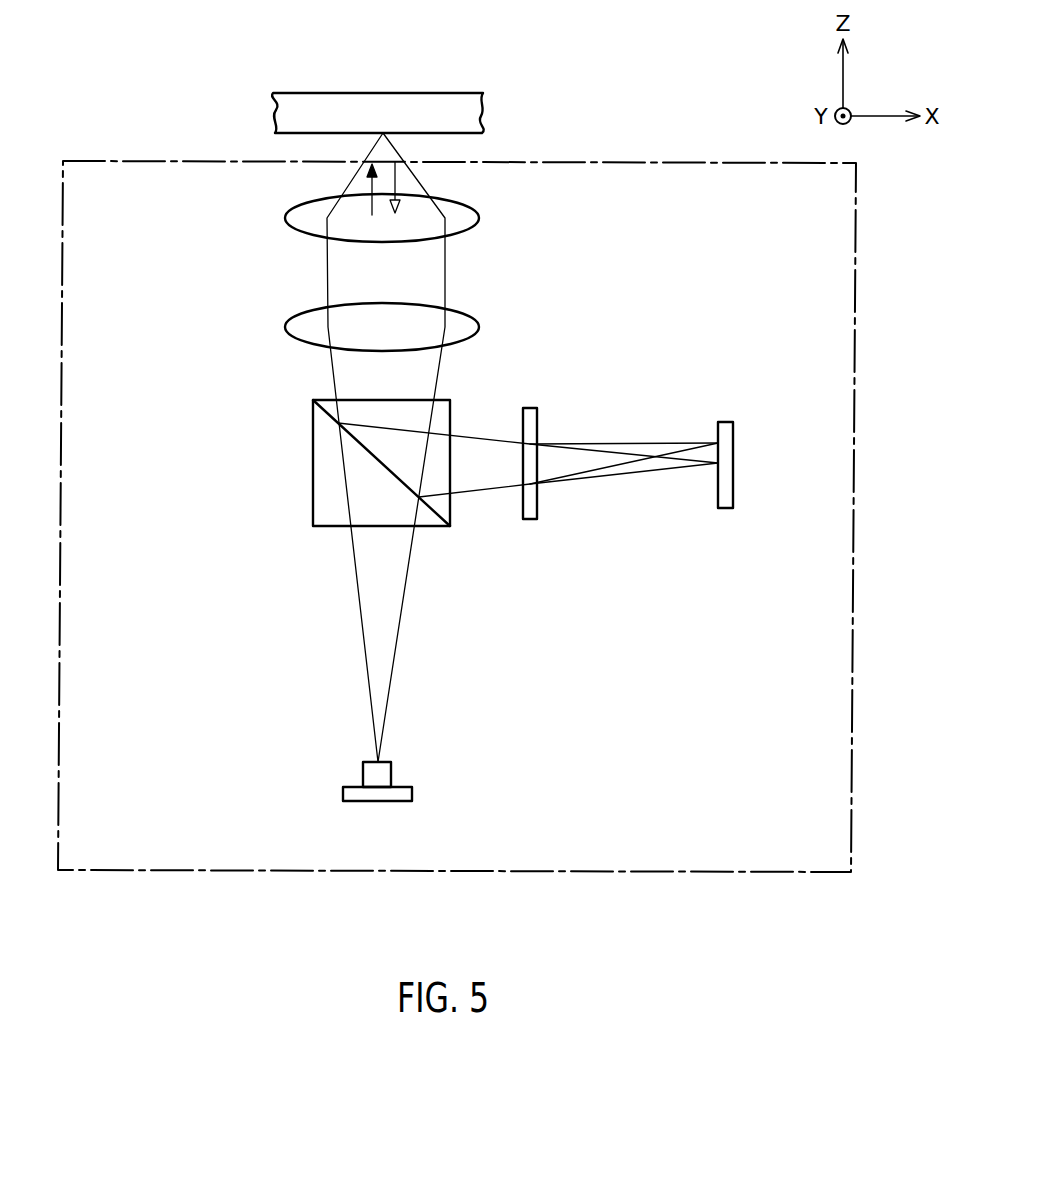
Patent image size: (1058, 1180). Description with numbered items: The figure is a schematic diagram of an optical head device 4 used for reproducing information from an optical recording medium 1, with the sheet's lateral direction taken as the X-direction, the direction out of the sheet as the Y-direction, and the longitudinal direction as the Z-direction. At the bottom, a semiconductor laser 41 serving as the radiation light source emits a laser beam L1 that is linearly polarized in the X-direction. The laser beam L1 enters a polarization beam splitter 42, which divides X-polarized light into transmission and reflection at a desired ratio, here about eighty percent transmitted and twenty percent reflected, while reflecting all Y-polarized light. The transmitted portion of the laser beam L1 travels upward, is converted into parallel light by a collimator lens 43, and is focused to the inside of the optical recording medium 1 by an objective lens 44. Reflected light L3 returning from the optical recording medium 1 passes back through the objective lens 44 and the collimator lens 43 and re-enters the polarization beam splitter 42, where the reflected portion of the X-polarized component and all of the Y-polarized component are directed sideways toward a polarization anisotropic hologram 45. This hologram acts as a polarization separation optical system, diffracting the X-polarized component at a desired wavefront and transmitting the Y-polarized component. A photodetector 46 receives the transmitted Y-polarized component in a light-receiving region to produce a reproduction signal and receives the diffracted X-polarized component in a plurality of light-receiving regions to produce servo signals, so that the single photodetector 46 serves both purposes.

The optical recording medium 1 is at (432, 103).
The optical head device 4 is at (663, 161).
The semiconductor laser 41 is at (392, 772).
The polarization beam splitter 42 is at (313, 438).
The collimator lens 43 is at (470, 314).
The objective lens 44 is at (480, 223).
The polarization anisotropic hologram 45 is at (532, 520).
The photodetector 46 is at (728, 425).
The laser beam L1 is at (367, 190).
The reflected light L3 is at (398, 181).